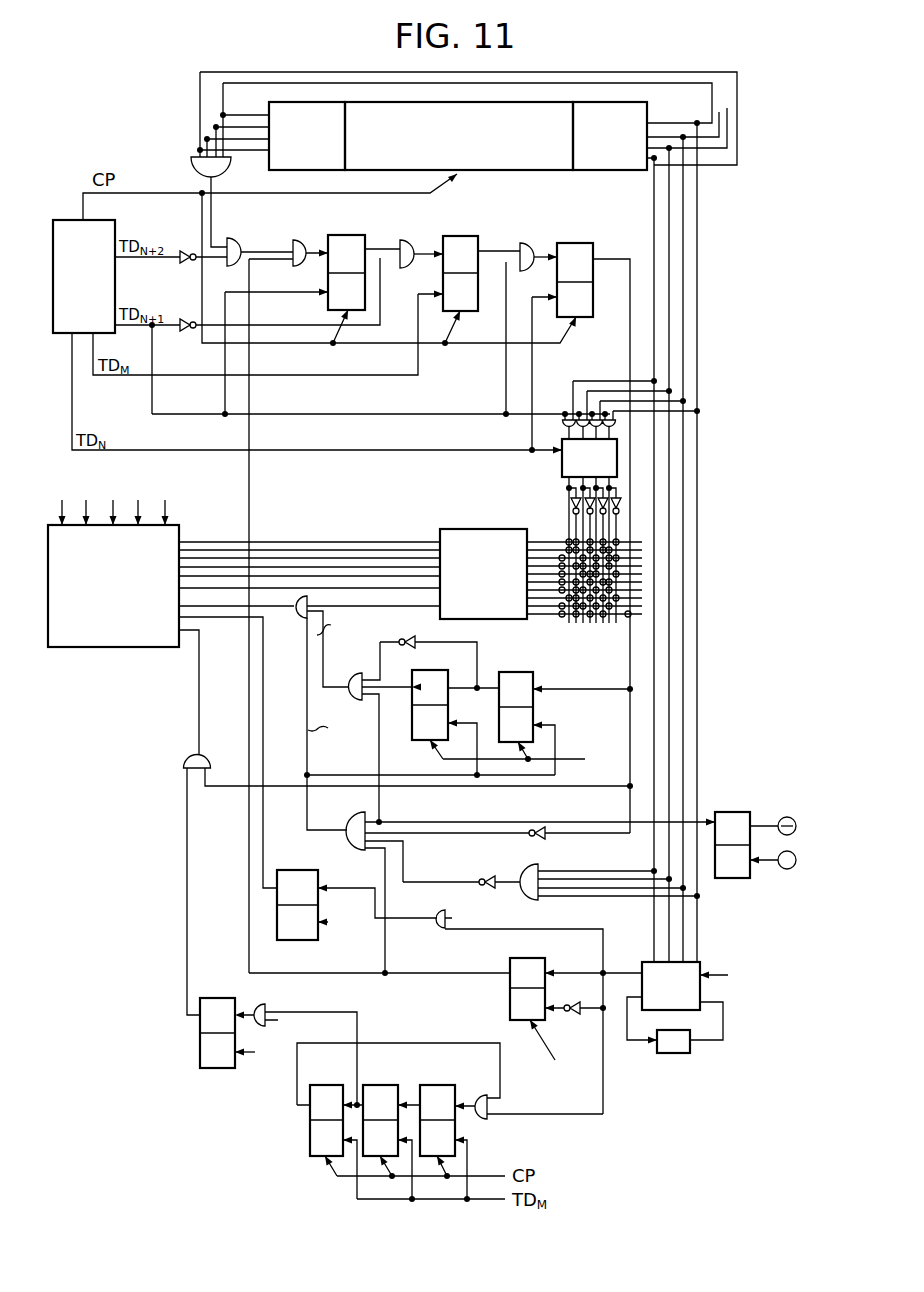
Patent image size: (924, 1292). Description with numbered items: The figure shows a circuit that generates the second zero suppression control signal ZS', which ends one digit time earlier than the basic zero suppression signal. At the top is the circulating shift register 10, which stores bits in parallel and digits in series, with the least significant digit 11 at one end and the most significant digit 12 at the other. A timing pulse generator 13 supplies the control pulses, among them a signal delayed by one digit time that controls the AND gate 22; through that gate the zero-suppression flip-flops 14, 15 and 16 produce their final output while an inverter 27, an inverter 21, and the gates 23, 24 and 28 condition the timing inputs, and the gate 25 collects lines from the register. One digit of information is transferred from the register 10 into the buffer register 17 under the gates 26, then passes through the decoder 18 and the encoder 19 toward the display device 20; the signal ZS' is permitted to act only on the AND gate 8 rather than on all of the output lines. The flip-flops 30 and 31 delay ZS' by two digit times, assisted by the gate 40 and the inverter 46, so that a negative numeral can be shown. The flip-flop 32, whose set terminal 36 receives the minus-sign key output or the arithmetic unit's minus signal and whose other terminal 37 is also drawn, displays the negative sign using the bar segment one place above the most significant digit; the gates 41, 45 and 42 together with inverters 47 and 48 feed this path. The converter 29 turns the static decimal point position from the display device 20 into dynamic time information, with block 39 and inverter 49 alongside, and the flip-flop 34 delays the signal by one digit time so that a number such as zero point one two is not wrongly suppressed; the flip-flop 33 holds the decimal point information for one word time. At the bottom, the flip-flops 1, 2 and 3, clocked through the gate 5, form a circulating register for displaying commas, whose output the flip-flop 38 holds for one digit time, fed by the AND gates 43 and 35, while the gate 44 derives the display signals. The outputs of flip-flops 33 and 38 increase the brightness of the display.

The flip-flop 1 is at (437, 1085).
The flip-flop 2 is at (383, 1085).
The flip-flop 3 is at (327, 1085).
The AND gate 5 is at (484, 1094).
The AND gate 8 is at (628, 620).
The circulating shift register 10 is at (544, 102).
The least significant digit 11 is at (602, 102).
The most significant digit 12 is at (300, 102).
The timing pulse generator 13 is at (74, 218).
The flip-flop 14 is at (354, 244).
The flip-flop 15 is at (458, 236).
The flip-flop 16 is at (574, 243).
The buffer register 17 is at (560, 450).
The decoder 18 is at (562, 534).
The encoder 19 is at (484, 529).
The display device 20 is at (179, 530).
The inverter 21 is at (183, 318).
The AND gate 22 is at (228, 246).
The AND gate 23 is at (408, 246).
The AND gate 24 is at (520, 242).
The OR gate 25 is at (193, 168).
The AND gates 26 is at (571, 420).
The inverter 27 is at (183, 250).
The AND gate 28 is at (300, 244).
The converter 29 is at (707, 962).
The flip-flop 30 is at (518, 672).
The flip-flop 31 is at (448, 674).
The flip-flop 32 is at (734, 812).
The flip-flop 33 is at (277, 928).
The flip-flop 34 is at (546, 962).
The AND gate 35 is at (258, 1008).
The set terminal 36 is at (780, 816).
The constant indicator 37 is at (784, 870).
The flip-flop 38 is at (212, 998).
The circuit block 39 is at (674, 1053).
The AND gate 40 is at (352, 673).
The AND gate 41 is at (350, 818).
The AND gate 42 is at (434, 910).
The AND gate 43 is at (208, 756).
The AND gate 44 is at (304, 618).
The AND gate 45 is at (528, 866).
The inverter 46 is at (404, 640).
The inverter 47 is at (544, 835).
The inverter 48 is at (476, 876).
The inverter 49 is at (572, 1014).